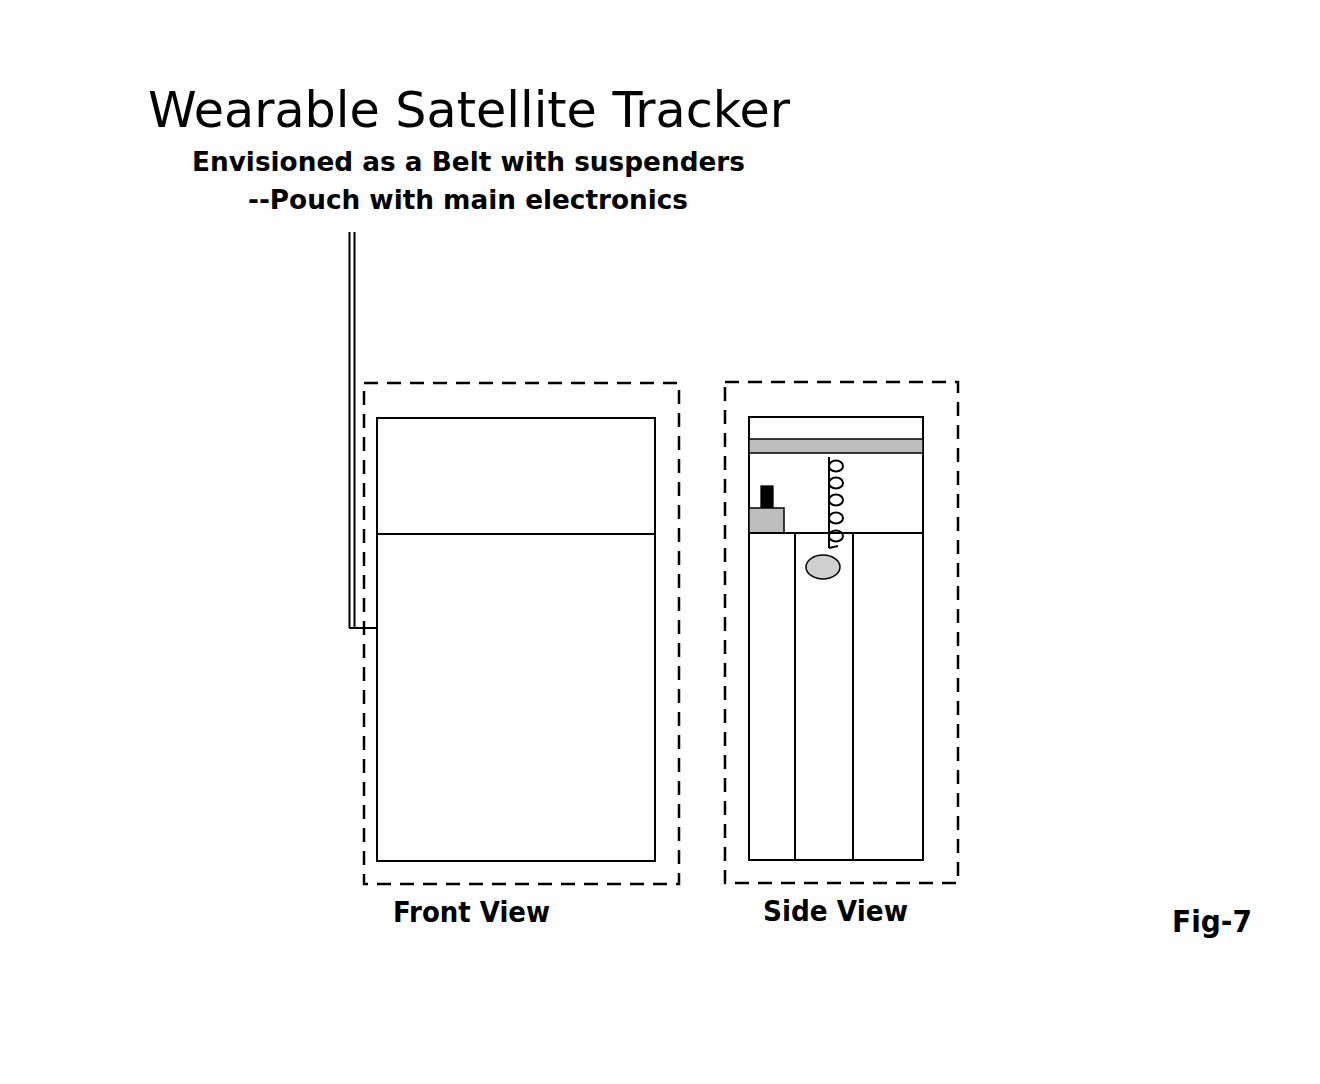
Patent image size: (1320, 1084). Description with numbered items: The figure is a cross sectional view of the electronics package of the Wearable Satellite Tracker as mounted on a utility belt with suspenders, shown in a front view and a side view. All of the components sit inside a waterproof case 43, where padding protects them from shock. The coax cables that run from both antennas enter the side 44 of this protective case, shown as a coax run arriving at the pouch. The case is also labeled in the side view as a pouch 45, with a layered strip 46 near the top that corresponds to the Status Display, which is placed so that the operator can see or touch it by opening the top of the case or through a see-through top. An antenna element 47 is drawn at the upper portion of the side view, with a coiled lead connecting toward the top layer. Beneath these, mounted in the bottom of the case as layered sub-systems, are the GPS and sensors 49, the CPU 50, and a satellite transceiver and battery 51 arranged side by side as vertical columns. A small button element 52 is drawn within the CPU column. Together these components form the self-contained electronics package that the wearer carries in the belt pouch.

The waterproof case 43 is at (343, 719).
The side of the protective case 44 is at (352, 625).
The pouch (side view) 45 is at (842, 377).
The Status Display 46 is at (925, 445).
The antenna 47 is at (767, 483).
The GPS and sensors 49 is at (793, 660).
The CPU 50 is at (850, 673).
The satellite transceiver/battery 51 is at (908, 692).
The panic button 52 is at (828, 582).